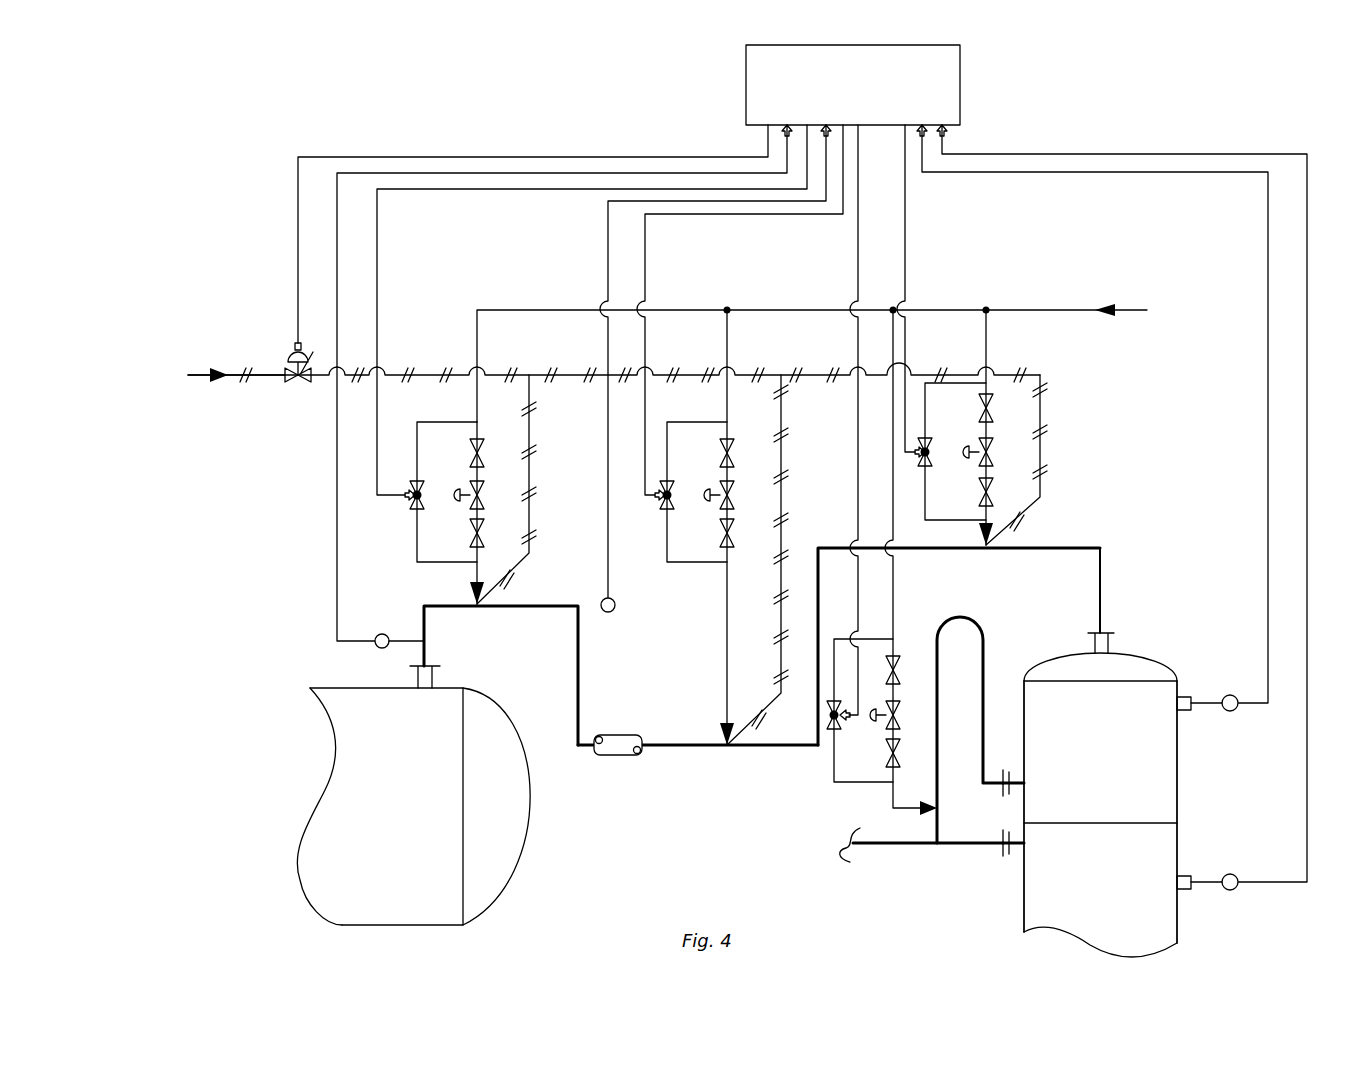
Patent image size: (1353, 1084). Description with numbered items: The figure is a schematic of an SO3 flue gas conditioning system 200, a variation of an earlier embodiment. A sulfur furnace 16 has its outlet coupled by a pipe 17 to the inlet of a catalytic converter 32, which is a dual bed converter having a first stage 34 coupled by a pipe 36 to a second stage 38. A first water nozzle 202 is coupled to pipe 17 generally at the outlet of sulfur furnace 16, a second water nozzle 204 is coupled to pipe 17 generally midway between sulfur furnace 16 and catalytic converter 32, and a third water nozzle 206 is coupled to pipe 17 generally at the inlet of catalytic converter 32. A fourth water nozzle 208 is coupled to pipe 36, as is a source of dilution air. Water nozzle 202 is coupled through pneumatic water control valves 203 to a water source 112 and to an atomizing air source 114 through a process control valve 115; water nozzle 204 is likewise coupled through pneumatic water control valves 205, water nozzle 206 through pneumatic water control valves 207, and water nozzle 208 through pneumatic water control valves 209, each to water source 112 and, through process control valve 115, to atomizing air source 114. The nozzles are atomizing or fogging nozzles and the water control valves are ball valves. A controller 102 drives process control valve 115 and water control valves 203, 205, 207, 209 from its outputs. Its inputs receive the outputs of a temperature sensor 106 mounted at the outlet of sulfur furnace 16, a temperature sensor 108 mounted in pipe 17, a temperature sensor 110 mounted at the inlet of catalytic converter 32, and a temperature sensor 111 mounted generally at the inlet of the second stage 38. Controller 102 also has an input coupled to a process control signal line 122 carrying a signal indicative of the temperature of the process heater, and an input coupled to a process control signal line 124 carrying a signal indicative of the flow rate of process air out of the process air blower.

The SO3 flue gas conditioning system 200 is at (260, 113).
The controller 102 is at (853, 85).
The process control signal line 122 is at (736, 68).
The process control signal line 124 is at (736, 99).
The water source 112 is at (1048, 302).
The atomizing air source 114 is at (188, 370).
The process control valve 115 is at (262, 386).
The pneumatic water control valves 203 is at (454, 415).
The pneumatic water control valves 205 is at (716, 415).
The pneumatic water control valves 207 is at (1047, 367).
The first water nozzle 202 is at (460, 595).
The second water nozzle 204 is at (713, 730).
The third water nozzle 206 is at (1017, 535).
The temperature sensor 108 is at (620, 617).
The temperature sensor 106 is at (366, 652).
The sulfur furnace 16 is at (413, 795).
The pipe 17 is at (684, 756).
The pneumatic water control valves 209 is at (906, 626).
The pipe 36 is at (991, 624).
The fourth water nozzle 208 is at (924, 824).
The catalytic converter 32 is at (1190, 772).
The first stage 34 is at (1097, 728).
The second stage 38 is at (1097, 890).
The temperature sensor 110 is at (1216, 688).
The temperature sensor 111 is at (1246, 897).